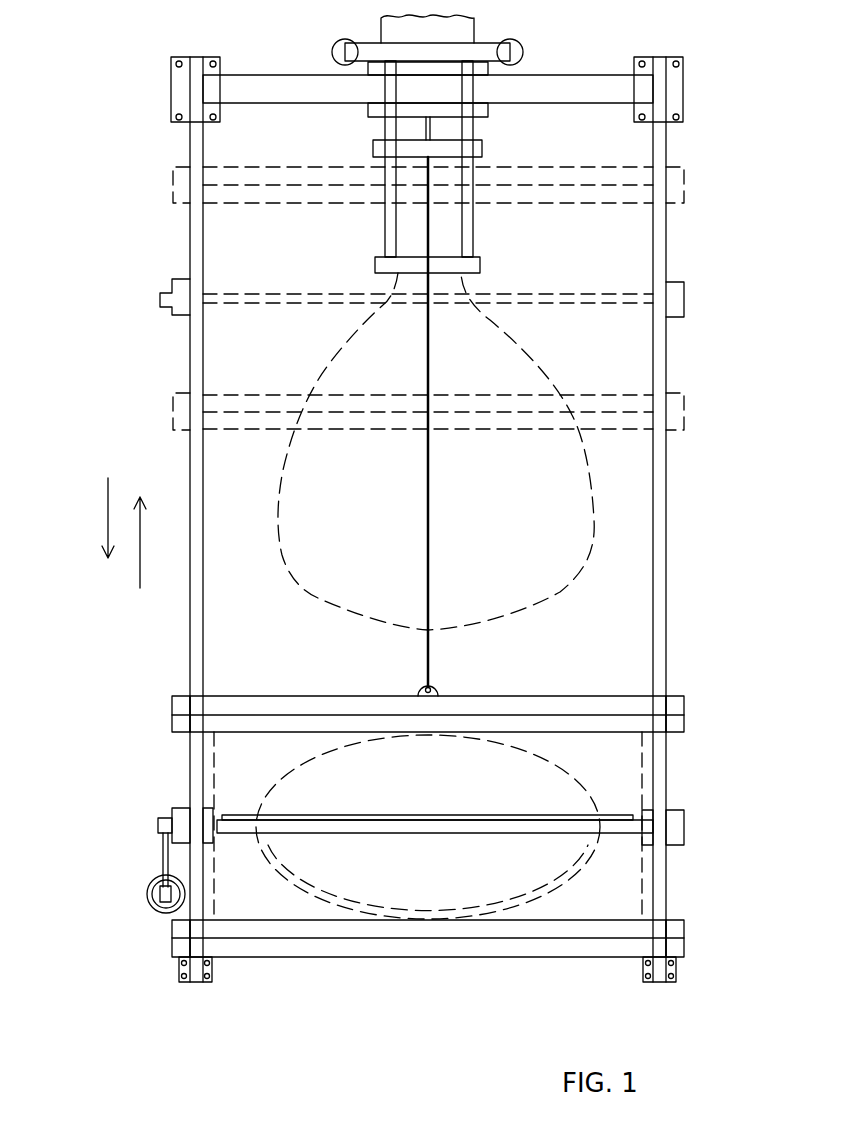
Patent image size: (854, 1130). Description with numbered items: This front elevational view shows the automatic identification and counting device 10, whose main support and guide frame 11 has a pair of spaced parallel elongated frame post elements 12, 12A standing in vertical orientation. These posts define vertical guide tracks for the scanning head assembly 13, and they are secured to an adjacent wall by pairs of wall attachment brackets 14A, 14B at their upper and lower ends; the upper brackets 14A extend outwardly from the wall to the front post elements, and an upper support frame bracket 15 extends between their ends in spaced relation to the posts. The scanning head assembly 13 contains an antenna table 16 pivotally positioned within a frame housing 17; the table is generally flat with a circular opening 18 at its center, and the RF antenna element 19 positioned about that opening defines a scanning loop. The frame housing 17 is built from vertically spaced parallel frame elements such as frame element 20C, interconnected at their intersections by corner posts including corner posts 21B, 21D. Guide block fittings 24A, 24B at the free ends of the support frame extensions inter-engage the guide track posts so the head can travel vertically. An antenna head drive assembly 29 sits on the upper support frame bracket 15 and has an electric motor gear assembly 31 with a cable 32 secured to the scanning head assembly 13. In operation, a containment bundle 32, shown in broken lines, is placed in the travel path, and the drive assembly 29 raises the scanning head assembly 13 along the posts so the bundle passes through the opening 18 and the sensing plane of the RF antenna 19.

The automatic identification and counting device 10 is at (727, 222).
The main support and guide frame 11 is at (680, 351).
The frame post element 12 is at (195, 450).
The frame post element 12A is at (668, 500).
The scanning head assembly 13 is at (668, 372).
The upper wall attachment brackets 14A is at (175, 100).
The lower wall attachment brackets 14B is at (178, 968).
The upper support frame bracket 15 is at (543, 92).
The antenna table 16 is at (588, 297).
The frame housing 17 is at (682, 790).
The circular opening 18 is at (590, 790).
The RF antenna element 19 is at (230, 818).
The frame element 20C is at (653, 705).
The corner post 21B is at (195, 745).
The corner post 21D is at (660, 895).
The guide block fitting 24A is at (158, 729).
The guide block fitting 24B is at (698, 728).
The antenna head drive assembly 29 is at (361, 121).
The electric motor gear assembly 31 is at (484, 112).
The cable 32 is at (427, 657).